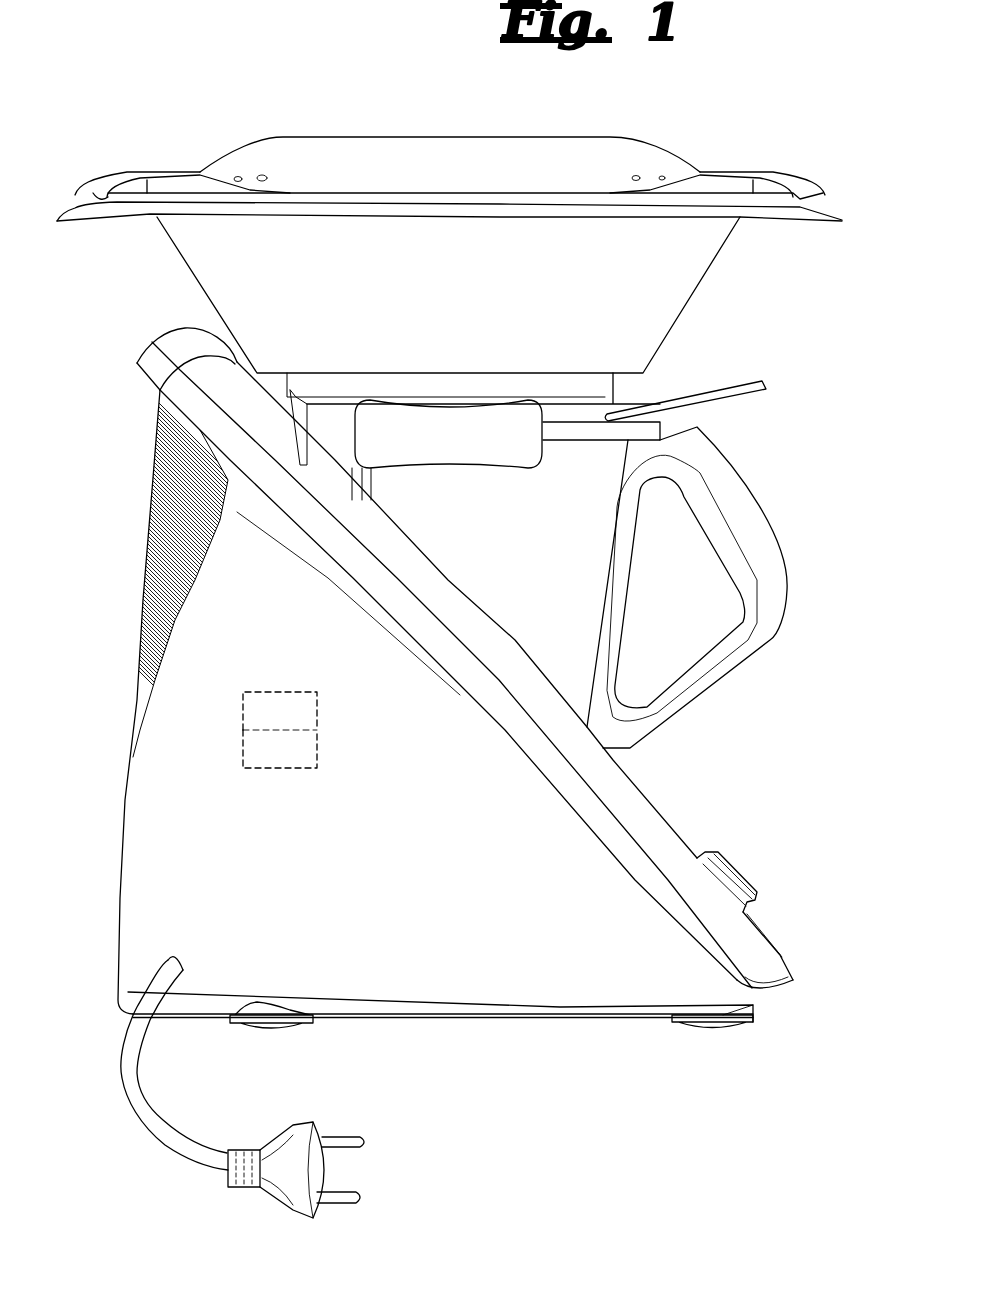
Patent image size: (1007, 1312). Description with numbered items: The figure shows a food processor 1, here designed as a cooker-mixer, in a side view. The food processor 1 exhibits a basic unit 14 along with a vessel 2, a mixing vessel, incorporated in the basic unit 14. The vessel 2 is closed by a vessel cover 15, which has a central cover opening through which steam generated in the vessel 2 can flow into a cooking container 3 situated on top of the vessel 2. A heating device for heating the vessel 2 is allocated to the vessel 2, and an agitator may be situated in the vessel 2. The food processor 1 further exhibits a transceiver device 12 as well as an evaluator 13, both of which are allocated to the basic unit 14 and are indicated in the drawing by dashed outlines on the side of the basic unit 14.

The food processor 1 is at (721, 736).
The vessel 2 is at (570, 522).
The cooking container 3 is at (748, 271).
The transceiver device 12 is at (267, 715).
The evaluator 13 is at (267, 747).
The basic unit 14 is at (414, 955).
The vessel cover 15 is at (570, 432).